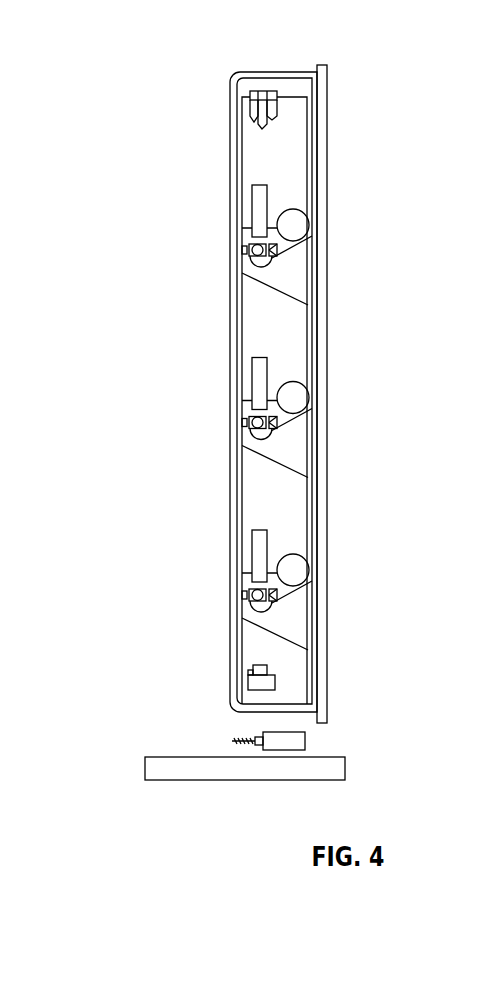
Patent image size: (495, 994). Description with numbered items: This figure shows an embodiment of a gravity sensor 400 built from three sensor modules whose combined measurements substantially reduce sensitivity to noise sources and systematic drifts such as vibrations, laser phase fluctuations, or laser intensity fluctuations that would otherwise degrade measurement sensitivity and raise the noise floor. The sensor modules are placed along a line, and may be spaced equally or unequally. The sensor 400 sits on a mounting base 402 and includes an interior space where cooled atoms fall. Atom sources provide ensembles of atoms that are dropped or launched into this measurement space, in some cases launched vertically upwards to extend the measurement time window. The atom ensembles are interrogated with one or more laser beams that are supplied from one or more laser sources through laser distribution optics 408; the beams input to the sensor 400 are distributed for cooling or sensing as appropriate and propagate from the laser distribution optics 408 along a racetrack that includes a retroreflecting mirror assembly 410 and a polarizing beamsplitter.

The sensor 400 is at (230, 80).
The mounting base 402 is at (342, 768).
The laser distribution optics 408 is at (307, 742).
The retroreflecting mirror assembly 410 is at (253, 112).